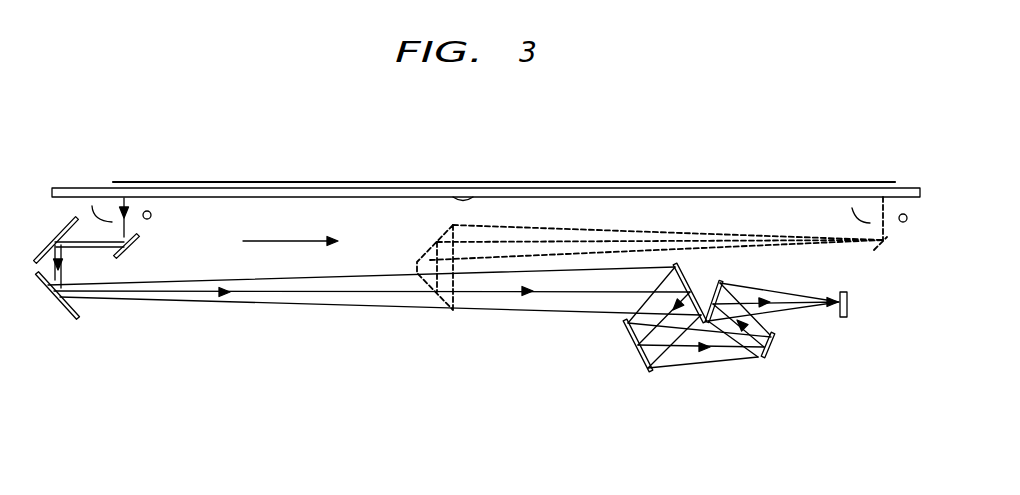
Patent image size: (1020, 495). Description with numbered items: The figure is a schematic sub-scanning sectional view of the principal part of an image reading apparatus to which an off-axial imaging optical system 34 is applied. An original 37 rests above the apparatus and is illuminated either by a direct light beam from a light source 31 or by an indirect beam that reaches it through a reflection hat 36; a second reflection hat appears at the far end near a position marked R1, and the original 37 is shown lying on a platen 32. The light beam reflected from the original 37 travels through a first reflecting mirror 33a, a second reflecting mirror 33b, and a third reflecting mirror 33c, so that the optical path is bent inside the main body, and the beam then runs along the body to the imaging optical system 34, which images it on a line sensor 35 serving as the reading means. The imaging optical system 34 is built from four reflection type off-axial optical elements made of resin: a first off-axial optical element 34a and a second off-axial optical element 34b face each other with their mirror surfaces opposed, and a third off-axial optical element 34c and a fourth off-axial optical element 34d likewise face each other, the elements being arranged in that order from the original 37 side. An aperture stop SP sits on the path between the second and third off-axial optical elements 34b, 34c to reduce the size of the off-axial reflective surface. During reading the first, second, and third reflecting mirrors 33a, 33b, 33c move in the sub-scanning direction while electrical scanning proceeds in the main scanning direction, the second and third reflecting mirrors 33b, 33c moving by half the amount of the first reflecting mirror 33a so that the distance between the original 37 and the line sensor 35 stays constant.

The light source 31 is at (146, 210).
The scale bar 32 is at (260, 187).
The first reflecting mirror 33a is at (126, 252).
The second reflecting mirror 33b is at (67, 207).
The third reflecting mirror 33c is at (67, 319).
The imaging optical system 34 is at (700, 319).
The first reflection type off-axial optical element 34a is at (703, 318).
The second reflection type off-axial optical element 34b is at (627, 347).
The third reflection type off-axial optical element 34c is at (773, 335).
The fourth reflection type off-axial optical element 34d is at (720, 283).
The line sensor 35 is at (848, 299).
The reflection hat 36 is at (101, 208).
The original 37 is at (325, 181).
The reference position R1 is at (473, 187).
The aperture stop SP is at (710, 378).